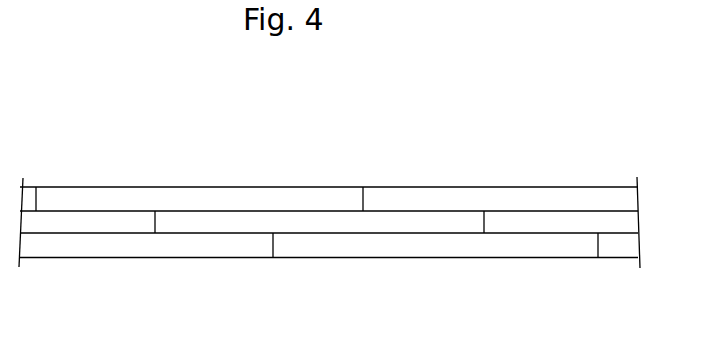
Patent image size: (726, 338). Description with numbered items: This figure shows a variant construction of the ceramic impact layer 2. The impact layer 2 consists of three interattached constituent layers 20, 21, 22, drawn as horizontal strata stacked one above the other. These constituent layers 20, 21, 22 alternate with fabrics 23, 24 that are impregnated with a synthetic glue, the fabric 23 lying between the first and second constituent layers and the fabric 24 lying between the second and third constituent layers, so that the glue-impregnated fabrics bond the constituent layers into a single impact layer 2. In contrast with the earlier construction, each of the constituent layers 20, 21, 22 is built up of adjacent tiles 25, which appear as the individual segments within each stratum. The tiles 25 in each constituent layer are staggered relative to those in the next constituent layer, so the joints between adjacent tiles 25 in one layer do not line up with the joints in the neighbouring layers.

The ceramic impact layer 2 is at (642, 187).
The constituent layer 20 is at (595, 202).
The constituent layer 21 is at (567, 222).
The constituent layer 22 is at (620, 247).
The fabric 23 is at (63, 211).
The fabric 24 is at (63, 211).
The tiles 25 is at (342, 248).